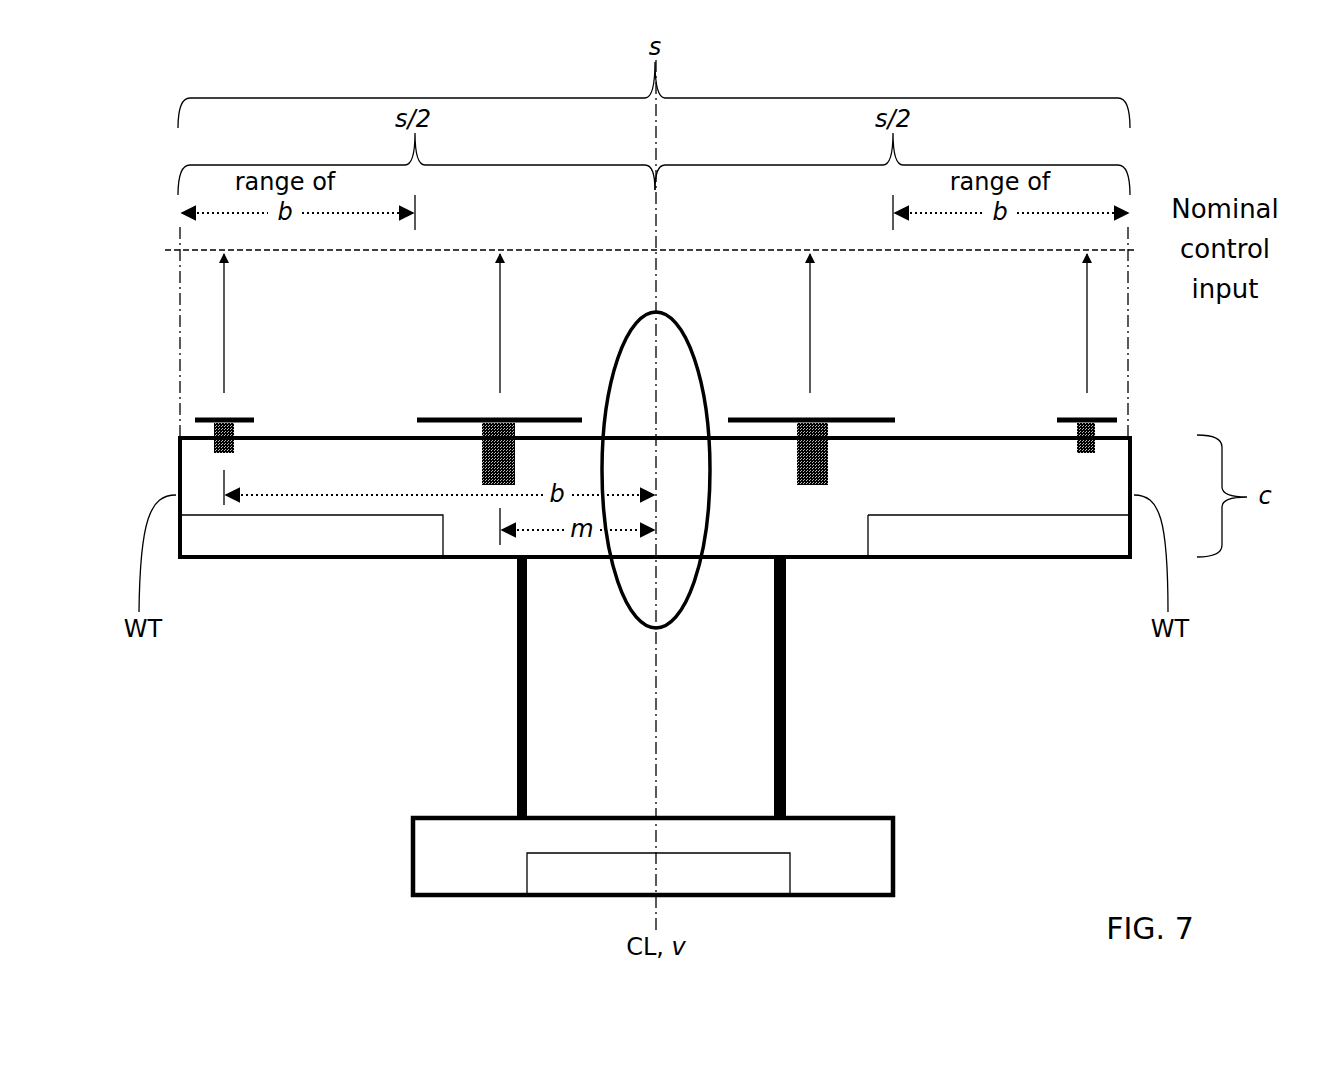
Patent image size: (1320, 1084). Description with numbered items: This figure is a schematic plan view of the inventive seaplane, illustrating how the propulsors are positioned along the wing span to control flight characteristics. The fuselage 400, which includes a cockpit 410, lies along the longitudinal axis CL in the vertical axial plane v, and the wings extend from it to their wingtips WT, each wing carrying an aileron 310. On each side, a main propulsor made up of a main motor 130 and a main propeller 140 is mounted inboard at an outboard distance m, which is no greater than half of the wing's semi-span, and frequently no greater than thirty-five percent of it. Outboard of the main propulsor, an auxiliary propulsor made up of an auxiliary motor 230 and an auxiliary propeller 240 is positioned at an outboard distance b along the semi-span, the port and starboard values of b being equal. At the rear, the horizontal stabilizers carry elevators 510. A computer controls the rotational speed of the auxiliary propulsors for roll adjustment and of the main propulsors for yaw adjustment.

The main motor 130 is at (812, 488).
The main propeller 140 is at (858, 408).
The auxiliary motor 230 is at (1083, 460).
The auxiliary propeller 240 is at (1065, 408).
The aileron 310 is at (380, 547).
The fuselage 400 is at (582, 633).
The cockpit 410 is at (608, 348).
The elevator 510 is at (730, 873).